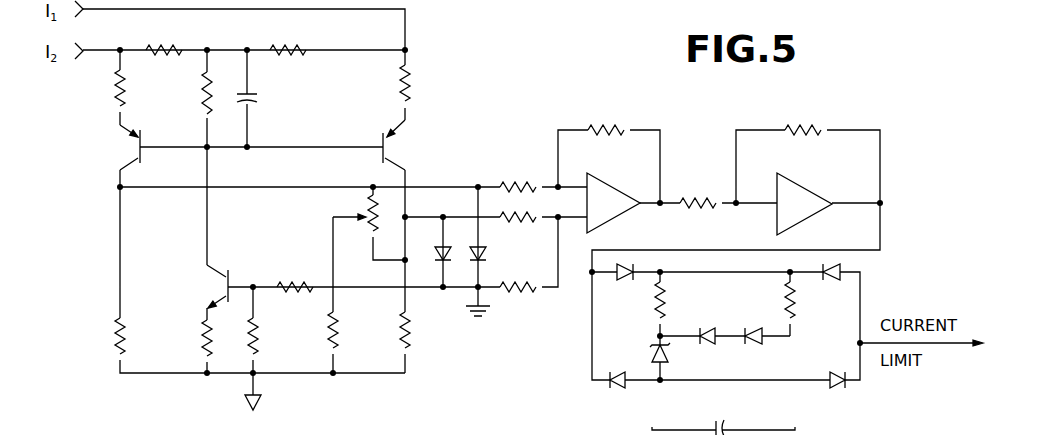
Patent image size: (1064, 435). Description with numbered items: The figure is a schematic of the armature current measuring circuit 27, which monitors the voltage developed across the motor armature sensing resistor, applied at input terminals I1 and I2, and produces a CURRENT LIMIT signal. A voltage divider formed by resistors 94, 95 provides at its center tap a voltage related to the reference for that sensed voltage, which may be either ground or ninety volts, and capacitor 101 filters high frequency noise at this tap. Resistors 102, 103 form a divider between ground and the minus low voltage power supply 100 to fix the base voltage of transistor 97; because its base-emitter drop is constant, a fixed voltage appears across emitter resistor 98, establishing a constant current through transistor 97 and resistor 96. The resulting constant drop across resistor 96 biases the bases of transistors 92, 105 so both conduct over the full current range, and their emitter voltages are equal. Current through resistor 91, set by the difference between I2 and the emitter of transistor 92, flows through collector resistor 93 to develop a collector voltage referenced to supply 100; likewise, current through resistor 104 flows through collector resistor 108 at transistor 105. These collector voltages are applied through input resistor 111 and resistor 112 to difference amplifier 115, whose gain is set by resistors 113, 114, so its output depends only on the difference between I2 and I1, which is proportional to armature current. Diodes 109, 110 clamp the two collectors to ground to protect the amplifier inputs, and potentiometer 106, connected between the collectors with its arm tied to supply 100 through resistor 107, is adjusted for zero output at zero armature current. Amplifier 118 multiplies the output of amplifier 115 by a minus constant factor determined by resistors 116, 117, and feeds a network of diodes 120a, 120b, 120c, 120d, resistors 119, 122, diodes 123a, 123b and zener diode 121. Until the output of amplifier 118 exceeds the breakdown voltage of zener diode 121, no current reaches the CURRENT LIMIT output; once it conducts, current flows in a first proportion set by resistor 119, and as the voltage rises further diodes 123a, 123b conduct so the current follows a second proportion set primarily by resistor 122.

The armature current measuring circuit 27 is at (484, 334).
The resistor 91 is at (110, 100).
The transistor 92 is at (123, 151).
The collector resistor 93 is at (110, 345).
The resistor 94 is at (152, 36).
The resistor 95 is at (276, 36).
The resistor 96 is at (189, 102).
The transistor 97 is at (210, 283).
The emitter resistor 98 is at (196, 345).
The minus low voltage power supply 100 is at (265, 405).
The capacitor 101 is at (262, 101).
The resistor 102 is at (273, 338).
The resistor 103 is at (294, 275).
The resistor 104 is at (418, 84).
The transistor 105 is at (408, 140).
The potentiometer 106 is at (352, 210).
The resistor 107 is at (312, 338).
The collector resistor 108 is at (382, 338).
The diode 109 is at (431, 240).
The diode 110 is at (490, 256).
The input resistor 111 is at (530, 168).
The resistor 112 is at (512, 235).
The resistor 113 is at (530, 304).
The resistor 114 is at (614, 114).
The difference amplifier 115 is at (622, 184).
The resistor 116 is at (714, 180).
The resistor 117 is at (811, 116).
The amplifier 118 is at (816, 184).
The resistor 119 is at (634, 306).
The diode 120a is at (600, 390).
The diode 120b is at (844, 394).
The diode 120c is at (632, 260).
The diode 120d is at (846, 260).
The zener diode 121 is at (648, 346).
The resistor 122 is at (801, 310).
The diode 123a is at (743, 318).
The diode 123b is at (704, 348).